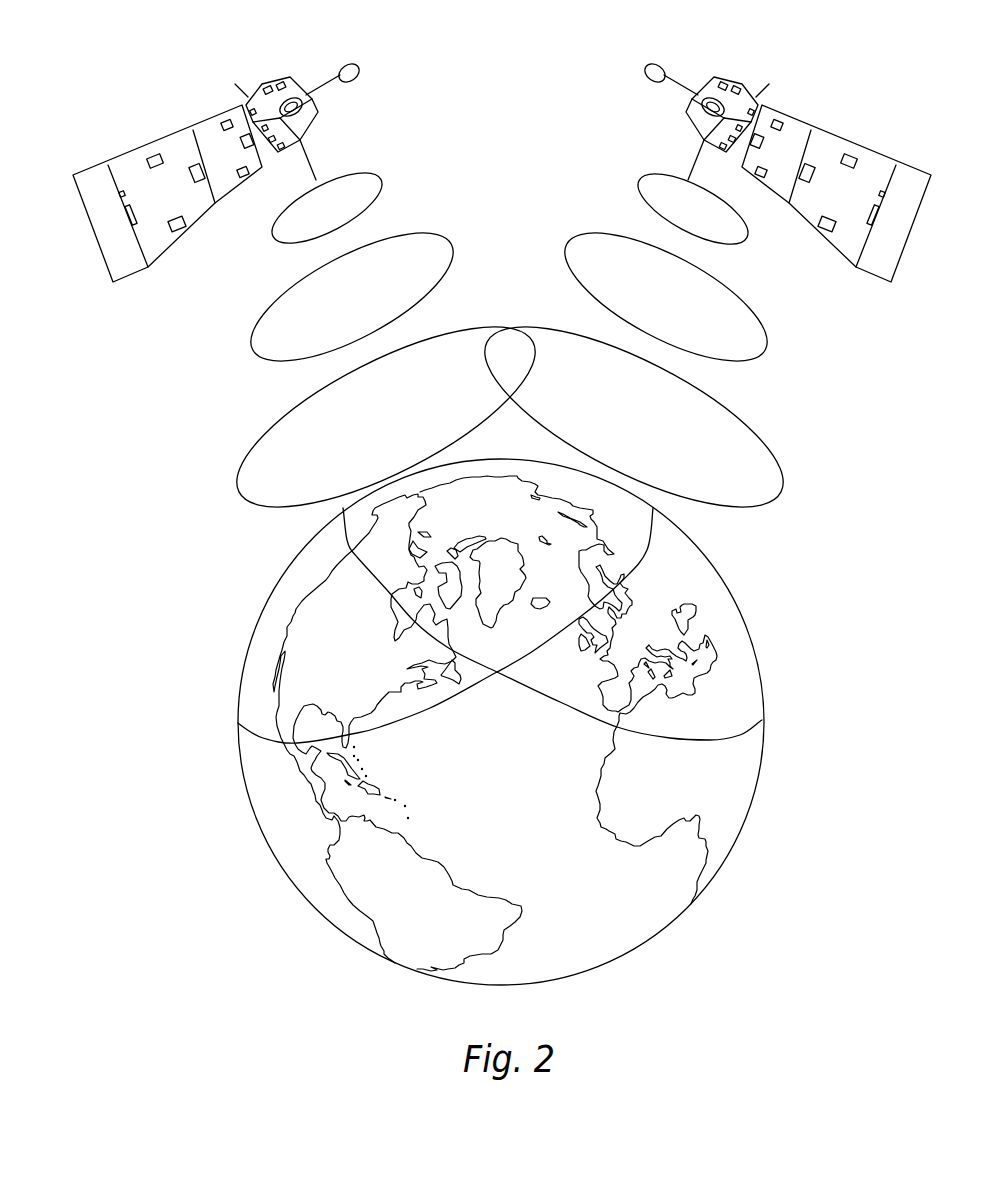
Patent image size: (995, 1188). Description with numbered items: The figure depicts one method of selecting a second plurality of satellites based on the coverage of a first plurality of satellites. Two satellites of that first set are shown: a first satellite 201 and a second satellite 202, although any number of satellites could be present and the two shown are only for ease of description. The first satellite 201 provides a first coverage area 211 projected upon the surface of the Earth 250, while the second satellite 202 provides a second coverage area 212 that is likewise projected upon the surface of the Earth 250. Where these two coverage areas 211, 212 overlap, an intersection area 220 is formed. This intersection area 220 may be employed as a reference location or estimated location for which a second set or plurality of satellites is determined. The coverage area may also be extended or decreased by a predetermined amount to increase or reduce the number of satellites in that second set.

The first satellite 201 is at (197, 101).
The second satellite 202 is at (822, 112).
The first coverage area 211 is at (327, 578).
The second coverage area 212 is at (677, 577).
The intersection area 220 is at (537, 520).
The Earth 250 is at (657, 930).